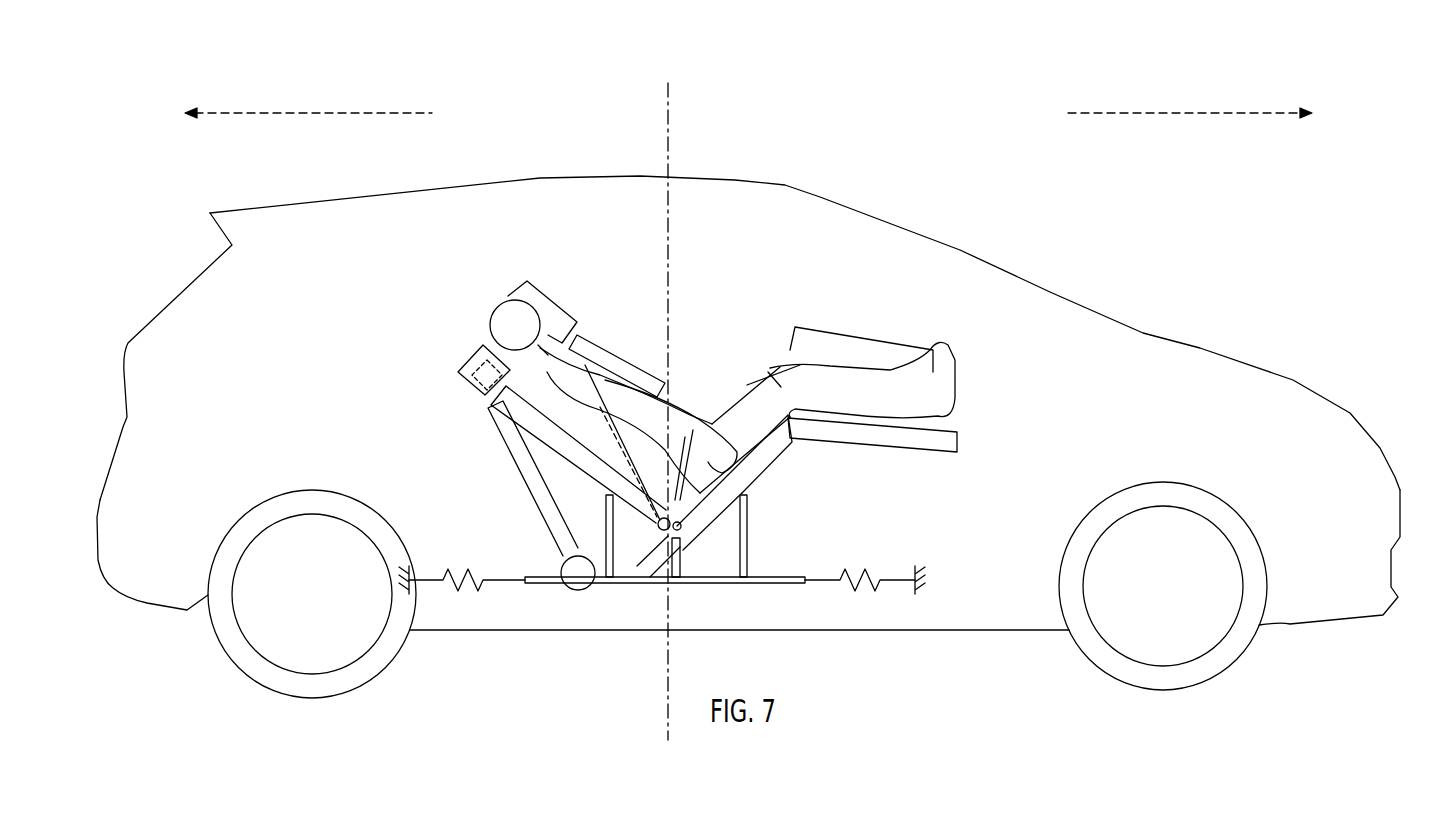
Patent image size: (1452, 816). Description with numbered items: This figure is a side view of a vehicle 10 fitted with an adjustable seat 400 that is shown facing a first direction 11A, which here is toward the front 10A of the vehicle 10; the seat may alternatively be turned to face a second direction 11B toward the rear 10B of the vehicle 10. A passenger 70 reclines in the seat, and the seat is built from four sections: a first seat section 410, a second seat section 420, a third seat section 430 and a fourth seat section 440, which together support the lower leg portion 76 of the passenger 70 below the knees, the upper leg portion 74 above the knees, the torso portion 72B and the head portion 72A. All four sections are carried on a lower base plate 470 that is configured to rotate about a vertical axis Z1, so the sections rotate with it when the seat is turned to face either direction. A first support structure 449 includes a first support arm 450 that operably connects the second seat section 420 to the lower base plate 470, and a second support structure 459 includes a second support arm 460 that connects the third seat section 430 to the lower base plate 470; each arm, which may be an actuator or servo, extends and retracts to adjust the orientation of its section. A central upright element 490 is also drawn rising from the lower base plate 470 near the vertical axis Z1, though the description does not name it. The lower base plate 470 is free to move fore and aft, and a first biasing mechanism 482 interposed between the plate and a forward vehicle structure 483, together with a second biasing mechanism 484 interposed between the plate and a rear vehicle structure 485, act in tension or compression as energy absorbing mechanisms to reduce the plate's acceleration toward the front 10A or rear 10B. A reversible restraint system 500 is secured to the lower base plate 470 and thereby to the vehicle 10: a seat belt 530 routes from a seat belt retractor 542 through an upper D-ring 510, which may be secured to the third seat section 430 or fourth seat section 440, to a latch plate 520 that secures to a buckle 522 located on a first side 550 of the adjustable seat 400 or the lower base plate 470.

The vehicle 10 is at (783, 185).
The front of the vehicle 10A is at (1400, 482).
The rear of the vehicle 10B is at (100, 497).
The first direction 11A is at (1218, 113).
The second direction 11B is at (370, 113).
The vertical axis Z1 is at (672, 103).
The passenger 70 is at (505, 308).
The head portion 72A is at (553, 298).
The torso portion 72B is at (650, 383).
The upper leg portion 74 is at (697, 428).
The lower leg portion 76 is at (868, 339).
The adjustable seat 400 is at (405, 287).
The first seat section 410 is at (875, 448).
The second seat section 420 is at (772, 458).
The third seat section 430 is at (607, 540).
The fourth seat section 440 is at (458, 372).
The first support structure 449 is at (757, 507).
The first support arm 450 is at (748, 520).
The second support structure 459 is at (528, 493).
The second support arm 460 is at (578, 565).
The lower base plate 470 is at (690, 583).
The first biasing mechanism 482 is at (850, 583).
The forward vehicle structure 483 is at (918, 583).
The second biasing mechanism 484 is at (505, 582).
The rear vehicle structure 485 is at (415, 583).
The pivot support 490 is at (652, 570).
The reversible restraint system 500 is at (692, 323).
The upper D-ring 510 is at (483, 350).
The latch plate 520 is at (670, 520).
The buckle 522 is at (682, 528).
The seat belt 530 is at (612, 358).
The seat belt retractor 542 is at (567, 585).
The first side 550 is at (545, 448).